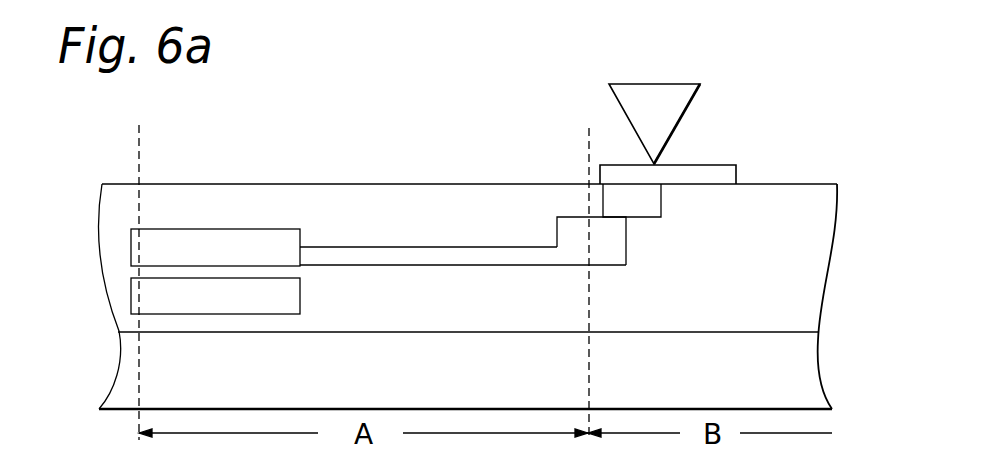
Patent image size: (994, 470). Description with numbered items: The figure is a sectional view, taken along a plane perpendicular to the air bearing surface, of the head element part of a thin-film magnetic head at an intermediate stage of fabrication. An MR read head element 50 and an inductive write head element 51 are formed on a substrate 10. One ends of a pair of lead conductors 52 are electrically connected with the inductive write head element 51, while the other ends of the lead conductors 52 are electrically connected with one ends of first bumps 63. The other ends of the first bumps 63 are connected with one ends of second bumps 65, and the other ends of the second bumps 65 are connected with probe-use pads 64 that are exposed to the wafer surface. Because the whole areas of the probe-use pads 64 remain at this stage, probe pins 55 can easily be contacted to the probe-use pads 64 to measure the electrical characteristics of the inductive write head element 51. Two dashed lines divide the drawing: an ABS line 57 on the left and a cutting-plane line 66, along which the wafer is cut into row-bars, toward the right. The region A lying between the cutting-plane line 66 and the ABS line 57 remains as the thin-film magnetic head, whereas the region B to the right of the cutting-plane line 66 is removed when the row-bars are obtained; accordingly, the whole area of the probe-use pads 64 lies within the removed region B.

The substrate 10 is at (797, 363).
The MR read head element 50 is at (150, 296).
The inductive write head element 51 is at (160, 251).
The lead conductors 52 is at (450, 257).
The probe pins 55 is at (673, 107).
The ABS line 57 is at (140, 143).
The first bumps 63 is at (614, 235).
The probe-use pads 64 is at (698, 172).
The second bumps 65 is at (648, 200).
The cutting-plane line 66 is at (590, 147).